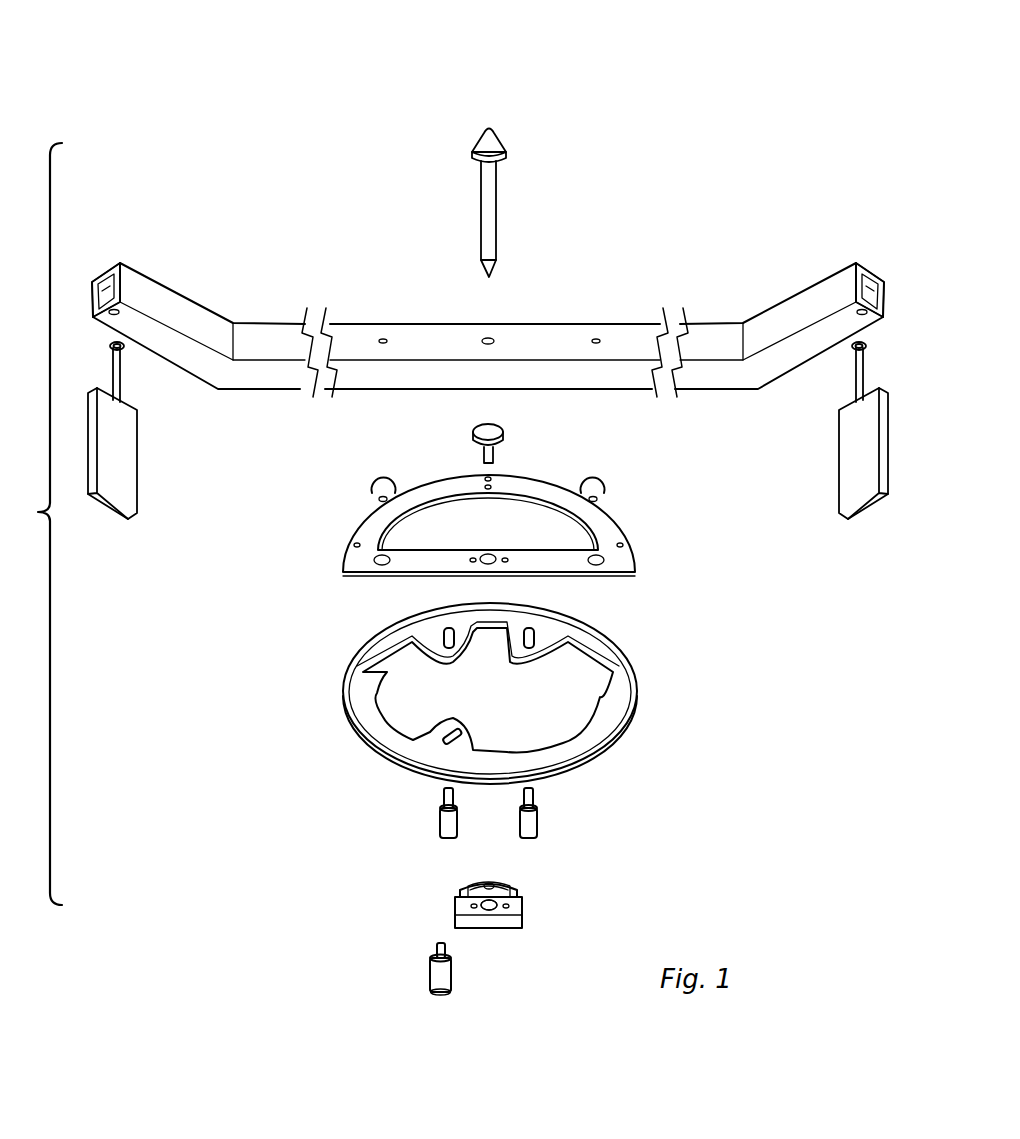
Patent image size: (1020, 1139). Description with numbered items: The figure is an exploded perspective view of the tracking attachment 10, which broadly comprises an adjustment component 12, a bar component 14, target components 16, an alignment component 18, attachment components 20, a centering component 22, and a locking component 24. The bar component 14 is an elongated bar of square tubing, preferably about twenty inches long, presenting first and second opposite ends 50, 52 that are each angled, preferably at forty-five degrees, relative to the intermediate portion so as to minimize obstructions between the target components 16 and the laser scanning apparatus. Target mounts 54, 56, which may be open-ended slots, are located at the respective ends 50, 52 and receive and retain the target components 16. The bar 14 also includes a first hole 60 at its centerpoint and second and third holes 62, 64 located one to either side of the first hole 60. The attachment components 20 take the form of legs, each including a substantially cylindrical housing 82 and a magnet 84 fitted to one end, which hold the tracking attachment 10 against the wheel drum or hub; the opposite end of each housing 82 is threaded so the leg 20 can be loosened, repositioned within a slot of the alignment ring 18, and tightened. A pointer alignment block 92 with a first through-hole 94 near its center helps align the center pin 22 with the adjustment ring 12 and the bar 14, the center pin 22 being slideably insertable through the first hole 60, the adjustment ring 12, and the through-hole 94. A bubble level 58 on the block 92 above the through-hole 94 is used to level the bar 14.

The tracking attachment 10 is at (738, 100).
The adjustment component 12 is at (672, 540).
The bar component 14 is at (315, 250).
The target component 16 is at (157, 500).
The alignment component 18 is at (657, 720).
The attachment component 20 is at (415, 977).
The centering component 22 is at (530, 170).
The locking component 24 is at (530, 415).
The first end 50 is at (92, 266).
The second end 52 is at (878, 250).
The target mount 54 is at (117, 315).
The target mount 56 is at (860, 318).
The bubble level 58 is at (502, 883).
The first hole 60 is at (482, 342).
The second hole 62 is at (383, 338).
The third hole 64 is at (598, 338).
The housing 82 is at (458, 965).
The magnet 84 is at (442, 997).
The pointer alignment block 92 is at (532, 917).
The first through-hole 94 is at (457, 899).